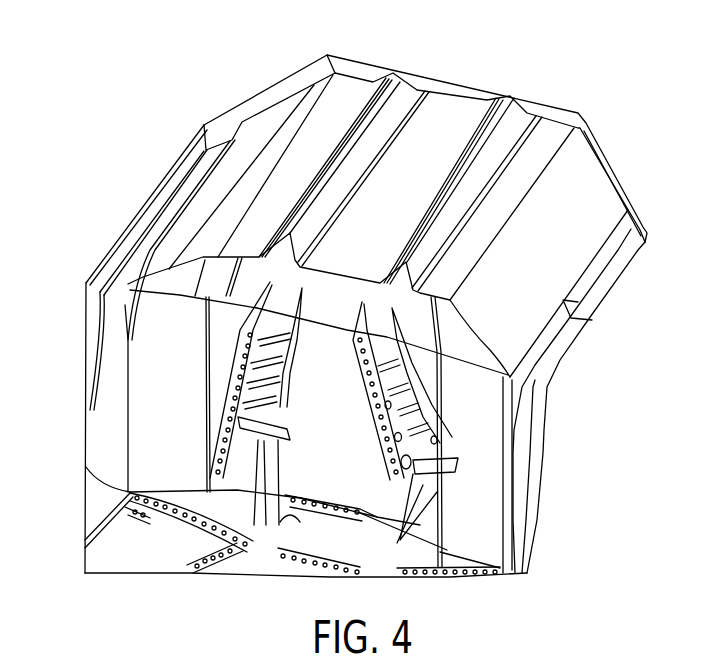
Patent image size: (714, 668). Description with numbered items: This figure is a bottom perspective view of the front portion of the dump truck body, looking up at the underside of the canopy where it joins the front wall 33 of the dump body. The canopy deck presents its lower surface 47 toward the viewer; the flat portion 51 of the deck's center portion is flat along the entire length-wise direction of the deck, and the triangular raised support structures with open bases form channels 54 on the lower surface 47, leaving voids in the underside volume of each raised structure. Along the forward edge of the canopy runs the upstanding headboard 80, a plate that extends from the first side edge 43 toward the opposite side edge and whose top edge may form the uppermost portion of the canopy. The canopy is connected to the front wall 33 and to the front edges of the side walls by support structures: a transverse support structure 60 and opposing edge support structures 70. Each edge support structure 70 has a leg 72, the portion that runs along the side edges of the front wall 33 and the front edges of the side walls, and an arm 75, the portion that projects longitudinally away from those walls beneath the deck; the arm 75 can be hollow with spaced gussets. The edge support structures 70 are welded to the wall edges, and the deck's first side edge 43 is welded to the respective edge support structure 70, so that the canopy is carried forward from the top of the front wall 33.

The front wall 33 is at (493, 522).
The first side edge 43 is at (132, 230).
The lower surface 47 is at (530, 253).
The flat portion 51 is at (462, 115).
The channel 54 is at (373, 103).
The transverse support structure 60 is at (480, 353).
The edge support structure 70 is at (118, 297).
The leg 72 is at (105, 353).
The arm 75 is at (172, 182).
The upstanding headboard 80 is at (430, 76).